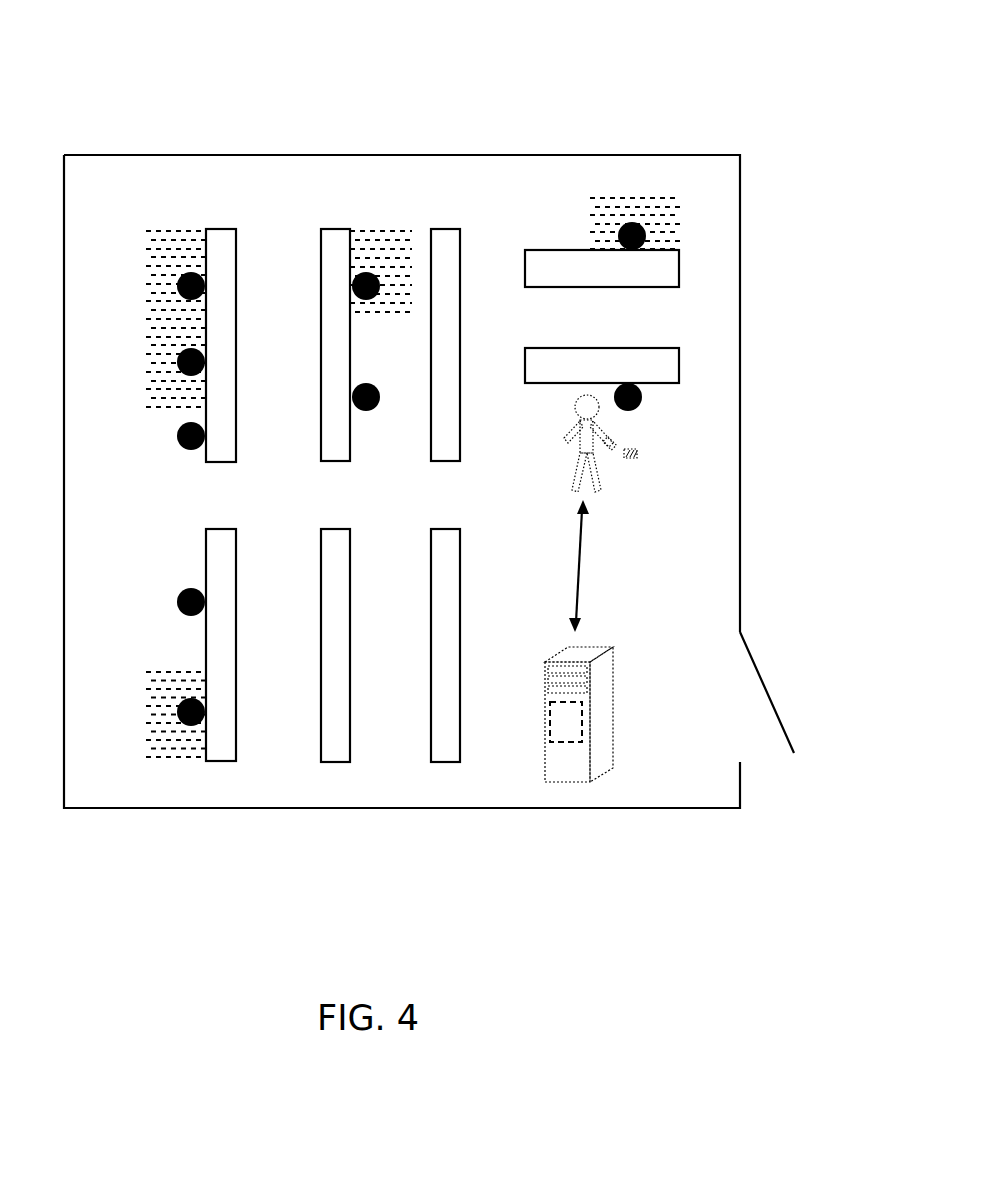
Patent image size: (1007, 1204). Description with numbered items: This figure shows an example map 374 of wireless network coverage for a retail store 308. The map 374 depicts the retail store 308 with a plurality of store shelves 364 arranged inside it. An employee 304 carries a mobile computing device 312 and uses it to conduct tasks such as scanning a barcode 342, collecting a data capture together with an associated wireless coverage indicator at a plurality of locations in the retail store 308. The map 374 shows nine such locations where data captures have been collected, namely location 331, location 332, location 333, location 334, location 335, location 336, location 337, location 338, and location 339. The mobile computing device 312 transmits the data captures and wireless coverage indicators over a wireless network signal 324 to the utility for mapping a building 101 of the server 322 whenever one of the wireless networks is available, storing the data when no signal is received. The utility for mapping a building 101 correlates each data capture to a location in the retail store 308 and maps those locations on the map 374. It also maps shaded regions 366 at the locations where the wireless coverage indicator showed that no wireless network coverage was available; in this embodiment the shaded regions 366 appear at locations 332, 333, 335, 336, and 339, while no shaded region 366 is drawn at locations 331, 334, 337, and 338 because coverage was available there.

The map of wireless network coverage 374 is at (732, 104).
The retail store 308 is at (478, 162).
The store shelves 364 is at (222, 237).
The shaded regions 366 is at (178, 245).
The location 331 is at (628, 385).
The location 332 is at (633, 223).
The location 333 is at (366, 270).
The location 334 is at (367, 382).
The location 335 is at (178, 286).
The location 336 is at (178, 362).
The location 337 is at (178, 436).
The location 338 is at (178, 602).
The location 339 is at (178, 712).
The employee 304 is at (572, 440).
The mobile computing device 312 is at (618, 437).
The barcode 342 is at (633, 455).
The wireless network signal 324 is at (578, 547).
The server 322 is at (570, 687).
The utility for mapping a building 101 is at (558, 725).